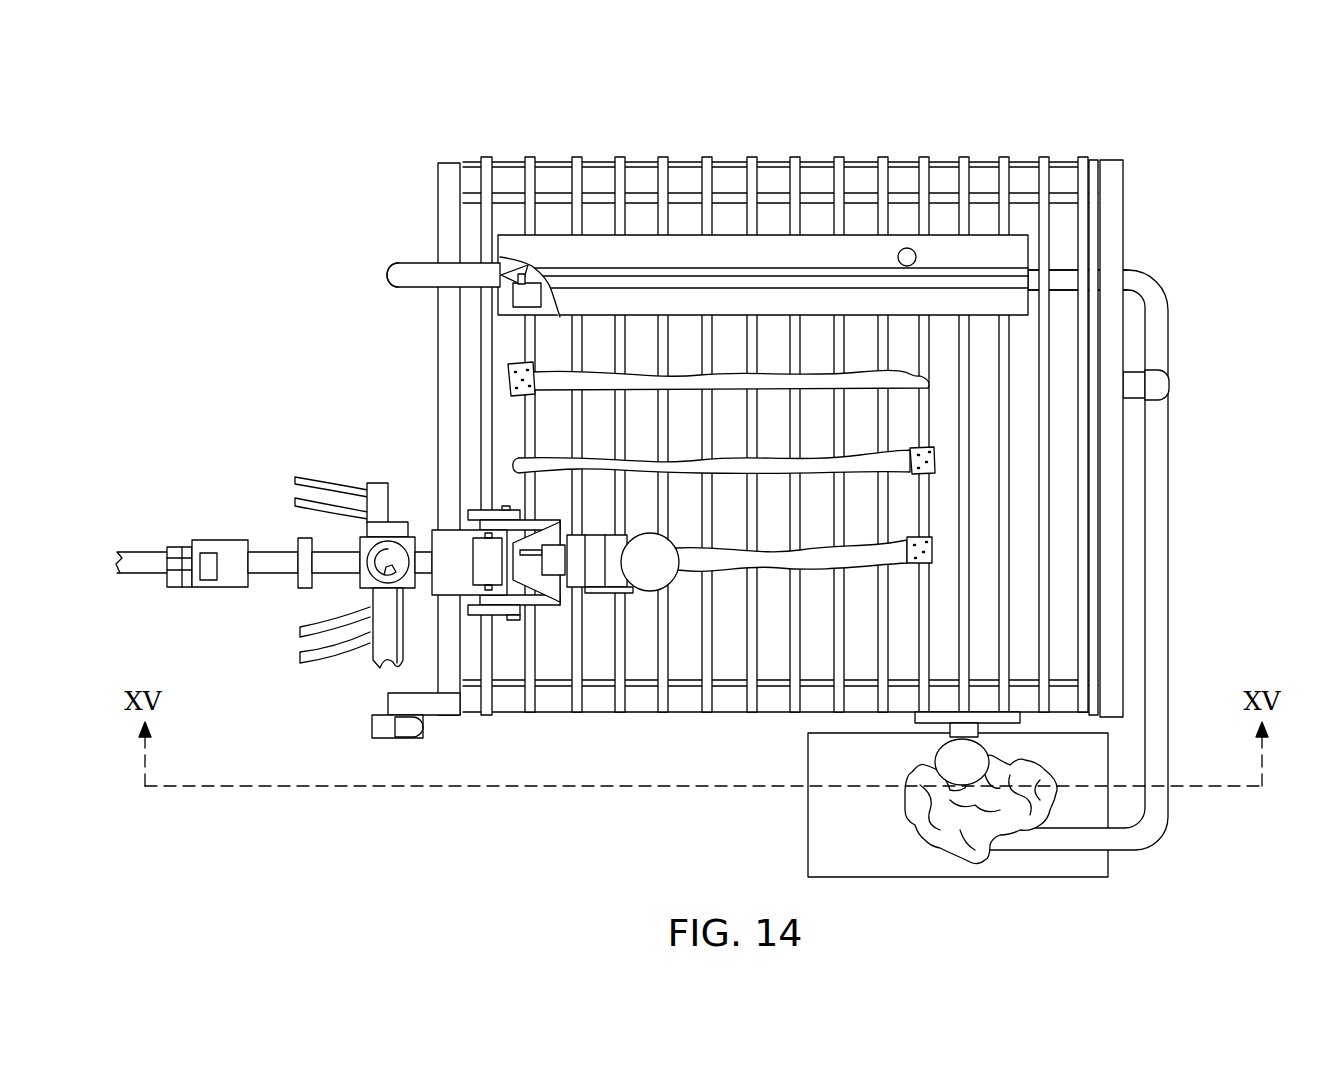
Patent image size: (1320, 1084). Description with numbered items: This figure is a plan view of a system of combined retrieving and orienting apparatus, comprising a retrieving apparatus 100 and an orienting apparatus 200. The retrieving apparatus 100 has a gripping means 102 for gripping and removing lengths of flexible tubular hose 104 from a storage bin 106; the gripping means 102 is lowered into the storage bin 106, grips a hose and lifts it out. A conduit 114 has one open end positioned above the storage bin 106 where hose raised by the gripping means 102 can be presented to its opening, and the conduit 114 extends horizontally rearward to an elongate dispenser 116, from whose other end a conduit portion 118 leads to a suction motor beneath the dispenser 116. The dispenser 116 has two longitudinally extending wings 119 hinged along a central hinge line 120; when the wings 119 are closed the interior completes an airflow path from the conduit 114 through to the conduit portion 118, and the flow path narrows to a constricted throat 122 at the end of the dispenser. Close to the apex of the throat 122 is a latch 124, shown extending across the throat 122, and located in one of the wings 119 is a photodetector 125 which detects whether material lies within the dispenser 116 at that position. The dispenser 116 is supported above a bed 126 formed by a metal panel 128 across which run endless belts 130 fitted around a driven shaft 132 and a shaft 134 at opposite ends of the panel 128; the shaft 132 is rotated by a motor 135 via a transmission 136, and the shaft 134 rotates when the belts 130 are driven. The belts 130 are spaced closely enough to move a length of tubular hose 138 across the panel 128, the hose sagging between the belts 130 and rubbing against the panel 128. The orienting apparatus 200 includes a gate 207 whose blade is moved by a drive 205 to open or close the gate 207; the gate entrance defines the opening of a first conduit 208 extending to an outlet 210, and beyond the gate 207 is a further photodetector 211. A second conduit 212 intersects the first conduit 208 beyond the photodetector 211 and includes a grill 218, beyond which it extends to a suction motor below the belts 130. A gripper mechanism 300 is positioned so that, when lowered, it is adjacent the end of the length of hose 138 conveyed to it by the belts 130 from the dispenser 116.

The retrieving apparatus 100 is at (710, 464).
The gripping means 102 is at (935, 760).
The tubular hose 104 is at (912, 830).
The storage bin 106 is at (808, 835).
The conduit 114 is at (1103, 530).
The dispenser 116 is at (826, 226).
The conduit portion 118 is at (424, 262).
The wings 119 is at (707, 207).
The hinge line 120 is at (970, 276).
The throat 122 is at (490, 292).
The latch 124 is at (528, 270).
The photodetector 125 is at (907, 247).
The bed 126 is at (809, 421).
The metal panel 128 is at (1097, 261).
The endless belts 130 is at (789, 437).
The driven shaft 132 is at (640, 705).
The shaft 134 is at (733, 183).
The motor 135 is at (372, 732).
The transmission 136 is at (388, 700).
The length of tubular hose 138 is at (780, 565).
The orienting apparatus 200 is at (374, 597).
The drive 205 is at (480, 540).
The gate 207 is at (447, 600).
The first conduit 208 is at (318, 592).
The outlet 210 is at (190, 545).
The further photodetector 211 is at (423, 537).
The second conduit 212 is at (377, 660).
The grill 218 is at (370, 588).
The gripper mechanism 300 is at (681, 592).